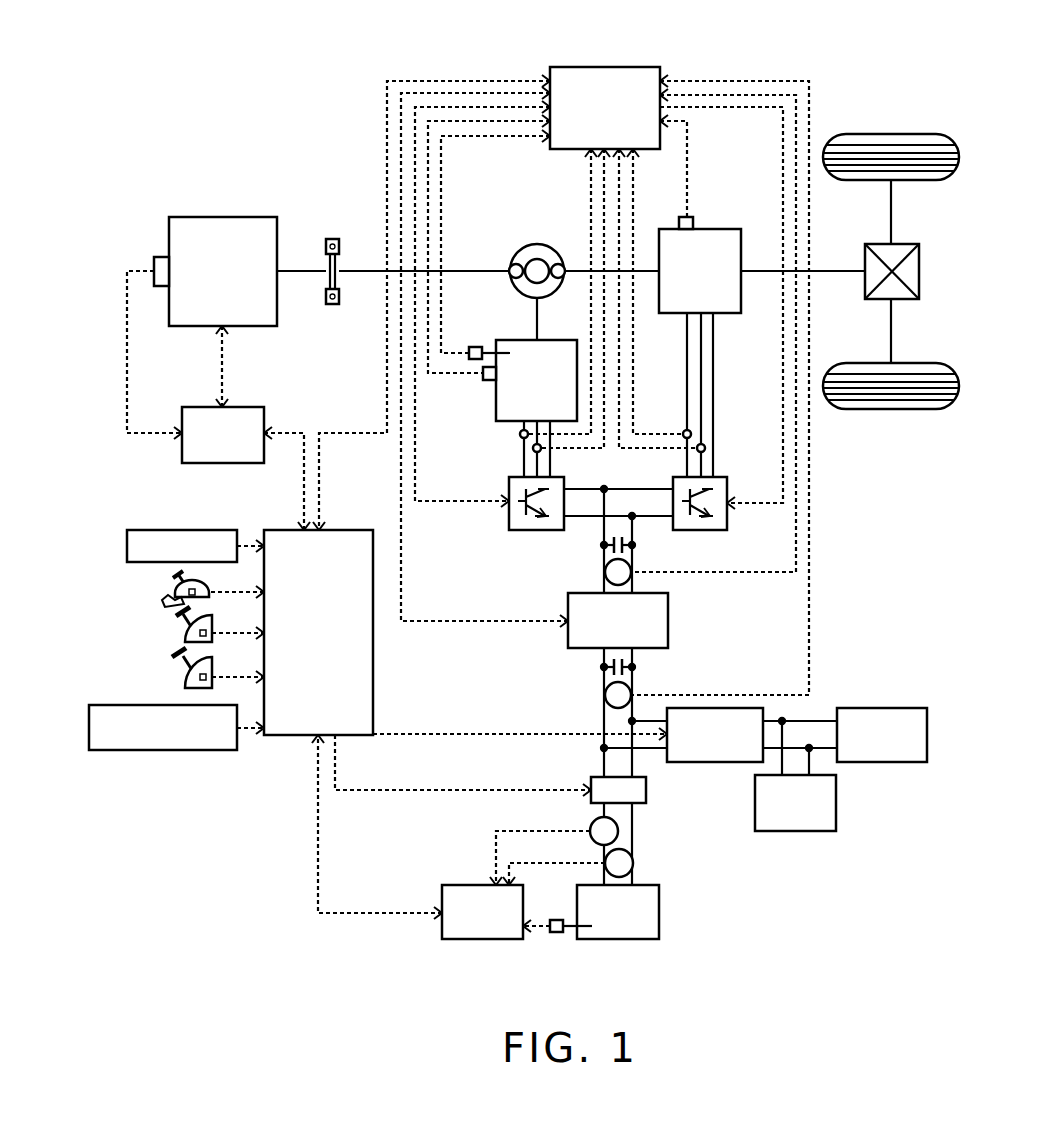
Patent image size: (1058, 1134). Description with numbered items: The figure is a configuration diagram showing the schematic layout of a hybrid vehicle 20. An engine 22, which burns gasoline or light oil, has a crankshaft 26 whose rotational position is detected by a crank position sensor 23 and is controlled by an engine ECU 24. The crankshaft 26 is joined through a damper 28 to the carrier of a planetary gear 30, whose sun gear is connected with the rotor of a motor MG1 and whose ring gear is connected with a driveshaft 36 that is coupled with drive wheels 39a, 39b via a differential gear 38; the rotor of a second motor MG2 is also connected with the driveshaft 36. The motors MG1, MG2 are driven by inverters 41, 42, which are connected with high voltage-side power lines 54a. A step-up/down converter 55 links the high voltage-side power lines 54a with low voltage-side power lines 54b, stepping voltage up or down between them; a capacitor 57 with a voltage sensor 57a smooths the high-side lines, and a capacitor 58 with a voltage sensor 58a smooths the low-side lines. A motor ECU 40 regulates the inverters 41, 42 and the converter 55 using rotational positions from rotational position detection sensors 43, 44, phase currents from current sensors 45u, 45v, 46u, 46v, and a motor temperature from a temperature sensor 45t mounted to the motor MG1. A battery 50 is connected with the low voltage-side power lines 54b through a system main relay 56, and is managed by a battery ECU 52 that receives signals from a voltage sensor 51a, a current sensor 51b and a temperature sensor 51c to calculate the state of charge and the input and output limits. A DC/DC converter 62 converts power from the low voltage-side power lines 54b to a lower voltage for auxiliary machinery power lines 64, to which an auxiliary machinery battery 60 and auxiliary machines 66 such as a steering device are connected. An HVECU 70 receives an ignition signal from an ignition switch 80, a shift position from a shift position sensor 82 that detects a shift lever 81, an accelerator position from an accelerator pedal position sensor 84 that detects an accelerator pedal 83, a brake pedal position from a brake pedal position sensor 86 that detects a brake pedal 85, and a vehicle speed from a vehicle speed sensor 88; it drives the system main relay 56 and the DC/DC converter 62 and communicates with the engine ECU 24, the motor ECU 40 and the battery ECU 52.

The hybrid vehicle 20 is at (741, 63).
The engine 22 is at (222, 217).
The crank position sensor 23 is at (160, 257).
The engine ECU 24 is at (250, 407).
The crankshaft 26 is at (299, 270).
The damper 28 is at (332, 239).
The planetary gear 30 is at (539, 244).
The driveshaft 36 is at (829, 270).
The differential gear 38 is at (904, 244).
The drive wheel 39a is at (890, 133).
The drive wheel 39b is at (890, 410).
The motor ECU 40 is at (605, 67).
The inverter 41 is at (509, 483).
The inverter 42 is at (673, 477).
The rotational position detection sensor 43 is at (486, 384).
The rotational position detection sensor 44 is at (700, 217).
The temperature sensor 45t is at (476, 347).
The current sensor 45u is at (519, 434).
The current sensor 45v is at (532, 448).
The current sensor 46u is at (692, 434).
The current sensor 46v is at (706, 448).
The battery 50 is at (659, 913).
The voltage sensor 51a is at (633, 863).
The current sensor 51b is at (618, 830).
The temperature sensor 51c is at (553, 932).
The battery ECU 52 is at (470, 885).
The high voltage-side power lines 54a is at (628, 520).
The low voltage-side power lines 54b is at (628, 760).
The step-up/down converter 55 is at (668, 620).
The system main relay 56 is at (646, 790).
The capacitor 57 is at (636, 545).
The voltage sensor 57a is at (604, 572).
The capacitor 58 is at (636, 666).
The voltage sensor 58a is at (604, 695).
The auxiliary machinery battery 60 is at (870, 708).
The DC/DC converter 62 is at (714, 762).
The auxiliary machinery power lines 64 is at (813, 746).
The auxiliary machines 66 is at (836, 803).
The HVECU 70 is at (345, 530).
The ignition switch 80 is at (127, 546).
The shift lever 81 is at (170, 582).
The shift position sensor 82 is at (176, 593).
The accelerator pedal 83 is at (180, 625).
The accelerator pedal position sensor 84 is at (196, 638).
The brake pedal 85 is at (180, 668).
The brake pedal position sensor 86 is at (196, 683).
The vehicle speed sensor 88 is at (89, 727).
The motor MG1 is at (510, 338).
The motor MG2 is at (730, 229).